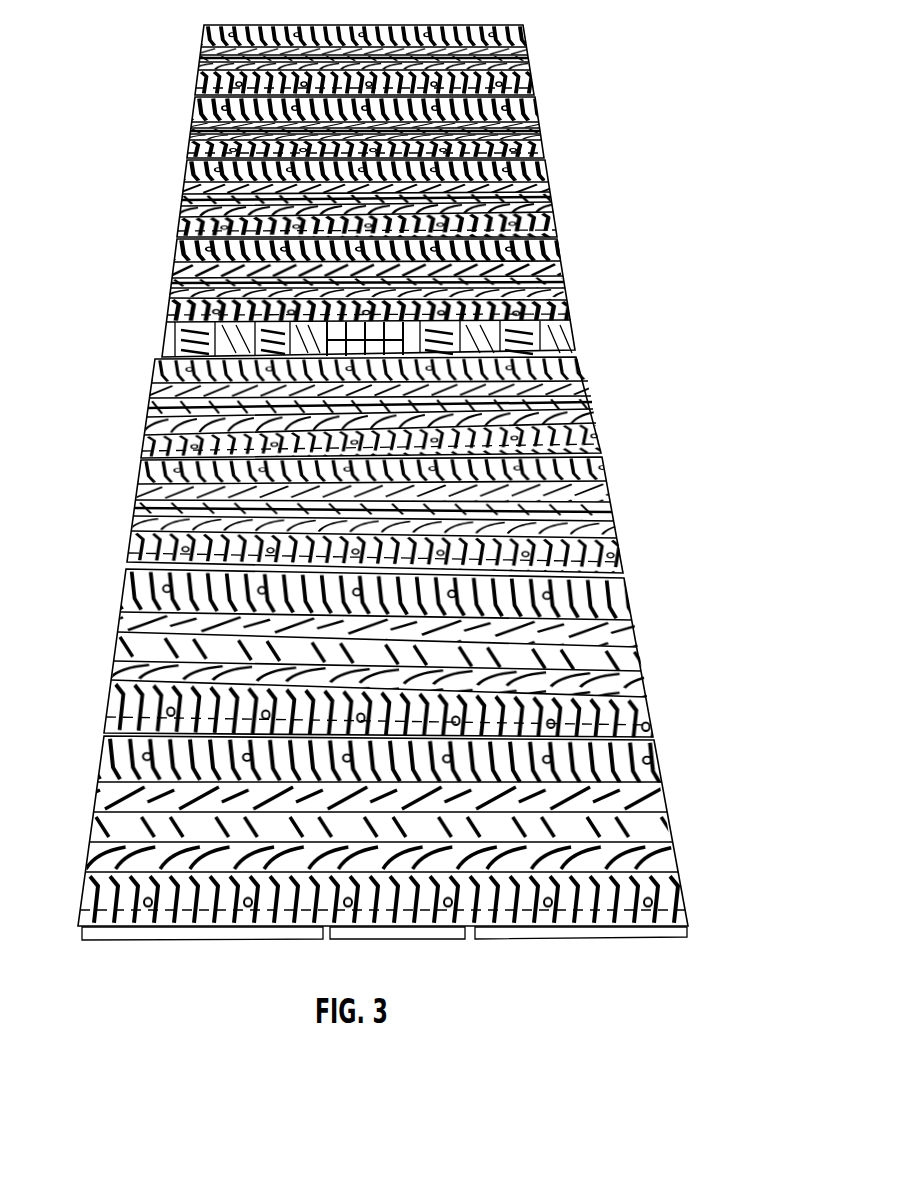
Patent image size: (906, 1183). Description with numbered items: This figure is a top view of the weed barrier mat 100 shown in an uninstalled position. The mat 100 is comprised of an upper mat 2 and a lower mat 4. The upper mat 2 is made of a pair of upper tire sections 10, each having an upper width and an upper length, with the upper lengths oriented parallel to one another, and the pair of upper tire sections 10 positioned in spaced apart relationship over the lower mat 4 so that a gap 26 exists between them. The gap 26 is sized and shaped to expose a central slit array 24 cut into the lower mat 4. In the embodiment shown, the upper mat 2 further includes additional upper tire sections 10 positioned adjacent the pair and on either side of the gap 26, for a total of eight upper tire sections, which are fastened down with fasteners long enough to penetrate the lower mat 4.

The mat 100 is at (409, 527).
The upper mat 2 is at (664, 635).
The lower mat 4 is at (343, 287).
The upper tire section 10 is at (666, 792).
The central slit array 24 is at (421, 322).
The gap 26 is at (417, 287).